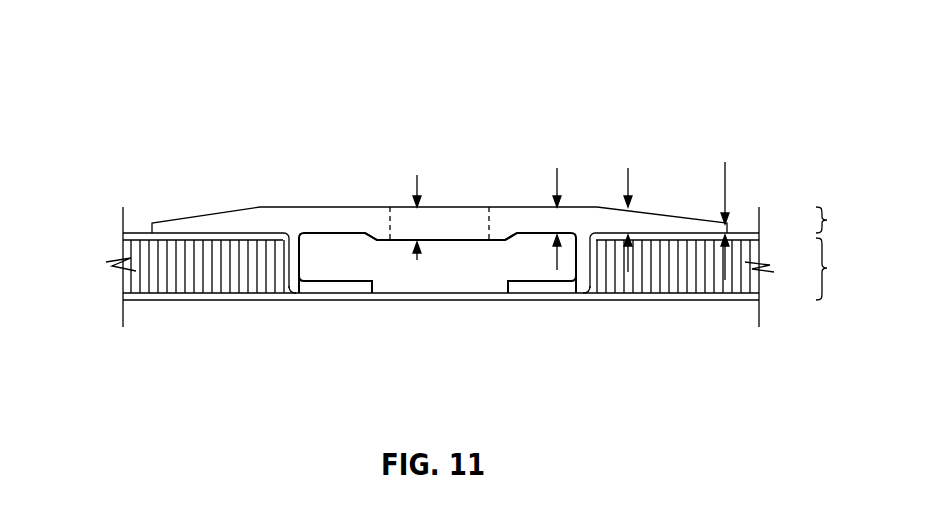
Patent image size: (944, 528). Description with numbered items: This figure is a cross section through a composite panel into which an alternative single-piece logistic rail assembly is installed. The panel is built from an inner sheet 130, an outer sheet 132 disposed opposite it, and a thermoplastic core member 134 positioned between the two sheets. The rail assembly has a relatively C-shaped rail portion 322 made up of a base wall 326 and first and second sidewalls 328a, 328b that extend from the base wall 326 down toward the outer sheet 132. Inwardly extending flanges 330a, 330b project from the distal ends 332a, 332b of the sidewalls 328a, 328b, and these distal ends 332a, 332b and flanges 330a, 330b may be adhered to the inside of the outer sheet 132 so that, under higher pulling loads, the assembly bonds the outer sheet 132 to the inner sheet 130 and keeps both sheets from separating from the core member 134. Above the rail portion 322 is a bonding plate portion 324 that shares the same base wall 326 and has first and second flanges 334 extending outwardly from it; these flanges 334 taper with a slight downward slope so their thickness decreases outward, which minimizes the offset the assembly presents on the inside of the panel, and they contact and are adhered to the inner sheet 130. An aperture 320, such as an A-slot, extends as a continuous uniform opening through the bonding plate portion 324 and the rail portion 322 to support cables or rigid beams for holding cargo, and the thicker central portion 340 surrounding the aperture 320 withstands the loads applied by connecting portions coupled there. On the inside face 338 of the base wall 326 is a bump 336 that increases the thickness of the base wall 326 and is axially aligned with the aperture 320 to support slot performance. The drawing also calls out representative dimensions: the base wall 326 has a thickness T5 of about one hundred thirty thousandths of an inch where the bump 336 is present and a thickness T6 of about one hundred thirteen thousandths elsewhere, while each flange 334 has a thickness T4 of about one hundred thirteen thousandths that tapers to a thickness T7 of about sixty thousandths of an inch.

The inner sheet 130 is at (145, 233).
The outer sheet 132 is at (160, 300).
The core member 134 is at (125, 253).
The aperture 320 is at (448, 200).
The rail portion 322 is at (507, 269).
The bonding plate portion 324 is at (849, 221).
The base wall 326 is at (377, 232).
The first sidewall 328a is at (297, 268).
The second sidewall 328b is at (583, 270).
The first flange 330a is at (345, 293).
The second flange 330b is at (521, 293).
The distal end of first sidewall 332a is at (298, 290).
The distal end of second sidewall 332b is at (578, 290).
The flange 334 is at (225, 227).
The bump 336 is at (502, 232).
The inside face 338 is at (329, 250).
The central portion 340 is at (491, 199).
The thickness of flange T4 is at (629, 204).
The thickness of base wall at bump T5 is at (406, 175).
The thickness of base wall T6 is at (559, 203).
The tapered thickness of flange T7 is at (746, 221).